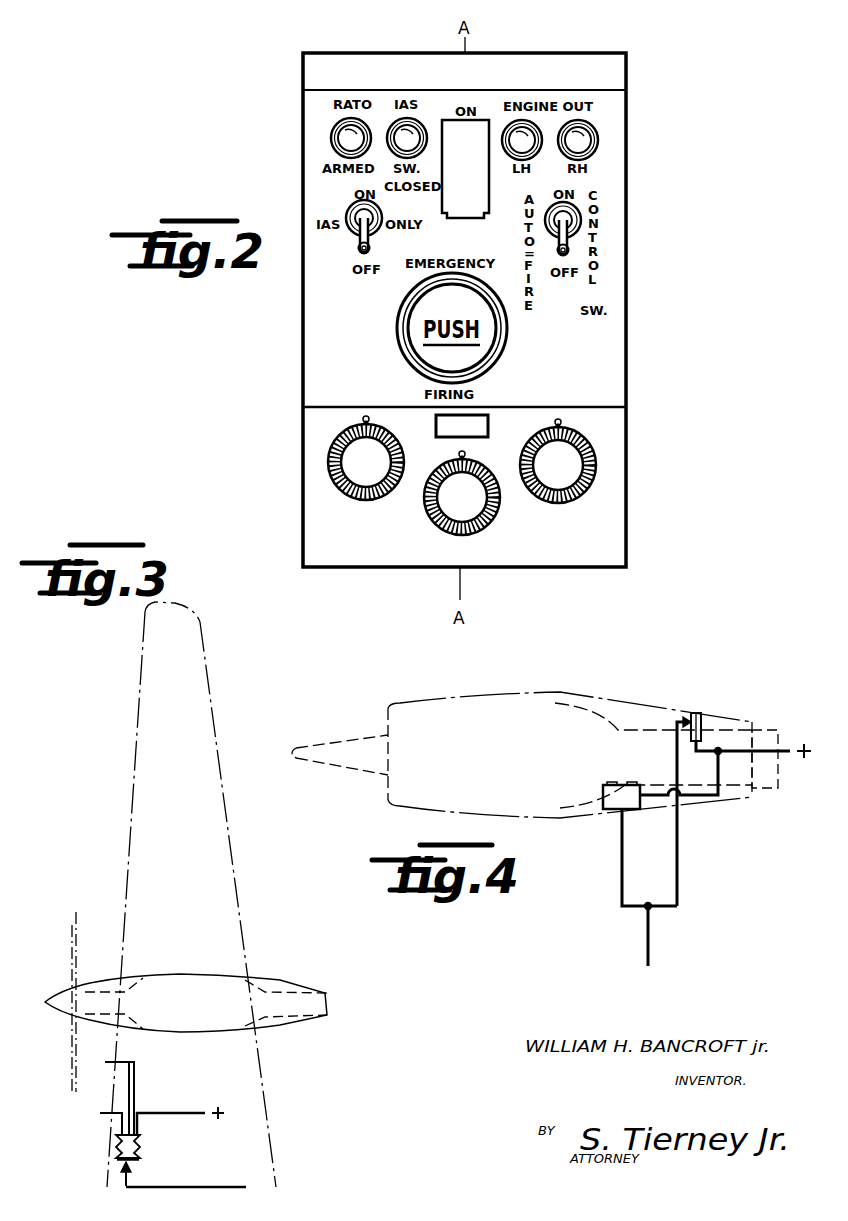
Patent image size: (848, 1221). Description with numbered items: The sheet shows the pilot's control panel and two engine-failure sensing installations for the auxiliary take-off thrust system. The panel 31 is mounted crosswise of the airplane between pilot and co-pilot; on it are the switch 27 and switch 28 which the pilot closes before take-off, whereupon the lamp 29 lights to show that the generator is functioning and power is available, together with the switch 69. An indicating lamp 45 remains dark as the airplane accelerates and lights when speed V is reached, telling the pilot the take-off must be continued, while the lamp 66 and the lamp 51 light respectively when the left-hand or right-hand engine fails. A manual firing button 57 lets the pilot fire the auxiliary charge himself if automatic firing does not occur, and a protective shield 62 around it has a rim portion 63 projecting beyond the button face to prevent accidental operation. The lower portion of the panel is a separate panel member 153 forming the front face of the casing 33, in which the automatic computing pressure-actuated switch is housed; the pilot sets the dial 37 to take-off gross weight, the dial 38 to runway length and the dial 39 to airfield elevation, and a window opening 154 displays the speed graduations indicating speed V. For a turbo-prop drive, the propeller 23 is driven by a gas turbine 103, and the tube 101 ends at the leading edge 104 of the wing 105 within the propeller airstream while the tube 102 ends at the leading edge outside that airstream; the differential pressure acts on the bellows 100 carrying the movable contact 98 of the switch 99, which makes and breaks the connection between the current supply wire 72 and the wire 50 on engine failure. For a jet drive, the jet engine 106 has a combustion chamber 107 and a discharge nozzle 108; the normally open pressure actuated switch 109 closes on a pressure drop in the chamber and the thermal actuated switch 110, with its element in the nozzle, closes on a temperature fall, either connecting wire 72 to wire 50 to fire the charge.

In FIG. 2, the lamp 29 is at (340, 130).
In FIG. 2, the indicating lamp 45 is at (396, 128).
In FIG. 2, the lamp 66 is at (534, 131).
In FIG. 2, the lamp 51 is at (592, 135).
In FIG. 2, the switch 27 is at (486, 206).
In FIG. 2, the switch 69 is at (357, 250).
In FIG. 2, the switch 28 is at (578, 260).
In FIG. 2, the manual firing button 57 is at (420, 311).
In FIG. 2, the protective shield 62 is at (403, 336).
In FIG. 2, the rim portion 63 is at (408, 360).
In FIG. 2, the panel 31 is at (612, 331).
In FIG. 2, the dial 37 is at (345, 450).
In FIG. 2, the window opening 154 is at (490, 430).
In FIG. 2, the dial 38 is at (481, 461).
In FIG. 2, the dial 39 is at (590, 441).
In FIG. 2, the casing 33 is at (627, 494).
In FIG. 2, the panel member 153 is at (590, 540).
In FIG. 3, the leading edge 104 is at (135, 740).
In FIG. 3, the wing 105 is at (197, 680).
In FIG. 3, the propeller 23 is at (76, 912).
In FIG. 3, the gas turbine 103 is at (246, 983).
In FIG. 3, the tube 101 is at (106, 1062).
In FIG. 3, the tube 102 is at (110, 1112).
In FIG. 3, the current supply wire 72 is at (166, 1113).
In FIG. 3, the bellows 100 is at (117, 1143).
In FIG. 3, the movable contact 98 is at (117, 1159).
In FIG. 3, the switch 99 is at (135, 1163).
In FIG. 3, the wire 50 is at (208, 1187).
In FIG. 4, the wire 50 is at (650, 964).
In FIG. 4, the jet engine 106 is at (453, 698).
In FIG. 4, the combustion chamber 107 is at (620, 728).
In FIG. 4, the thermal actuated switch 110 is at (704, 722).
In FIG. 4, the discharge nozzle 108 is at (767, 731).
In FIG. 4, the pressure actuated switch 109 is at (605, 795).